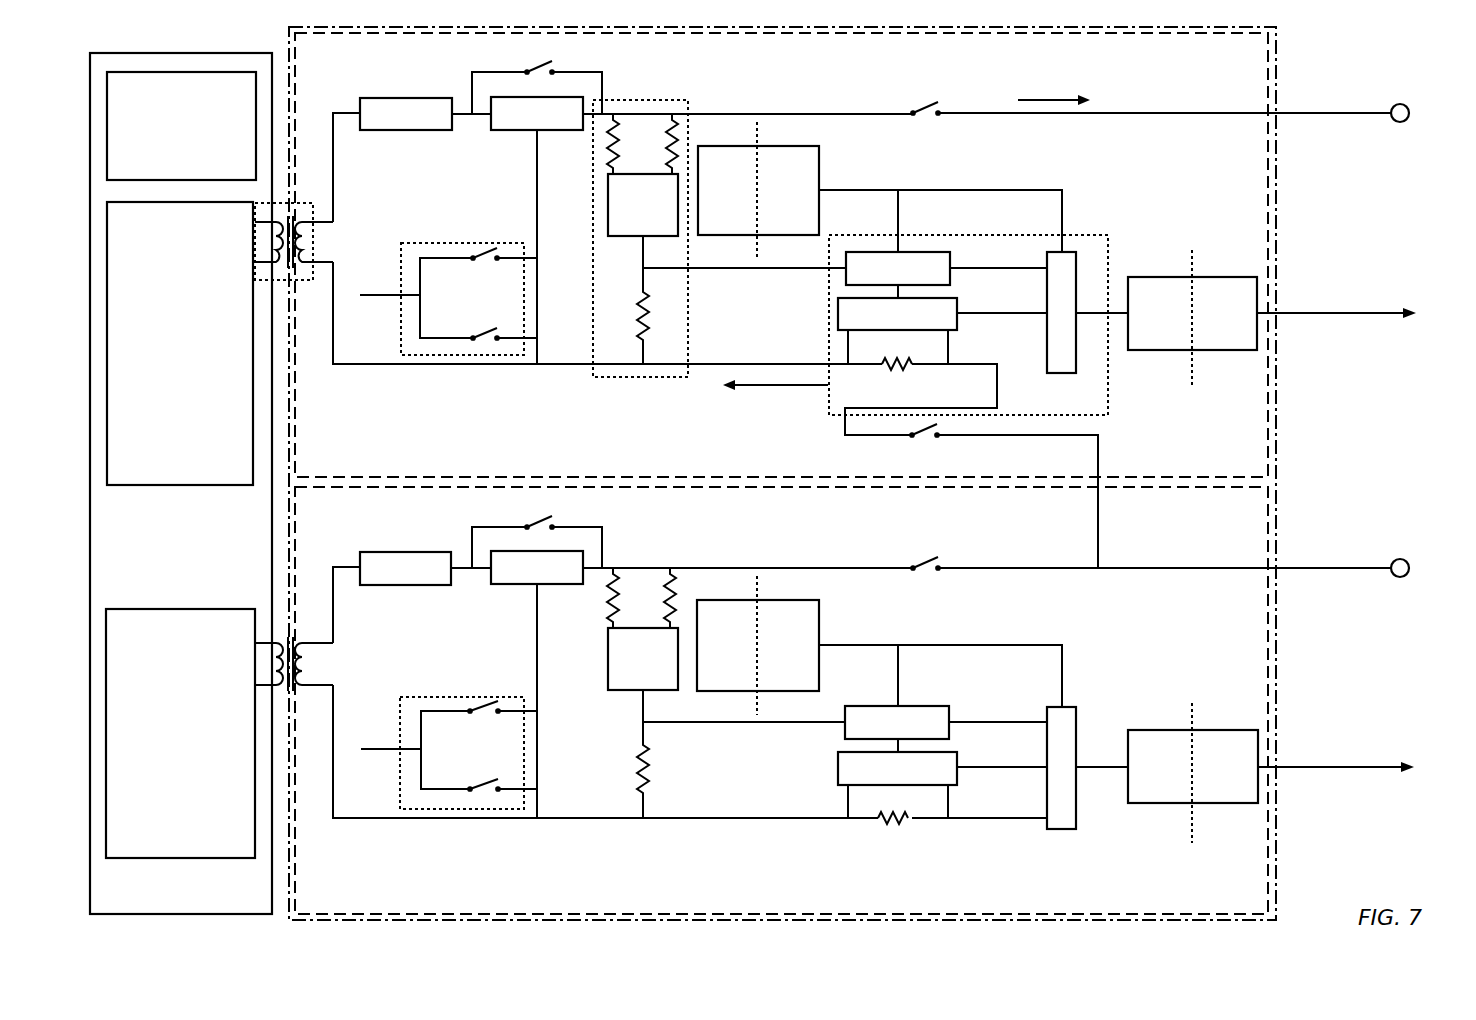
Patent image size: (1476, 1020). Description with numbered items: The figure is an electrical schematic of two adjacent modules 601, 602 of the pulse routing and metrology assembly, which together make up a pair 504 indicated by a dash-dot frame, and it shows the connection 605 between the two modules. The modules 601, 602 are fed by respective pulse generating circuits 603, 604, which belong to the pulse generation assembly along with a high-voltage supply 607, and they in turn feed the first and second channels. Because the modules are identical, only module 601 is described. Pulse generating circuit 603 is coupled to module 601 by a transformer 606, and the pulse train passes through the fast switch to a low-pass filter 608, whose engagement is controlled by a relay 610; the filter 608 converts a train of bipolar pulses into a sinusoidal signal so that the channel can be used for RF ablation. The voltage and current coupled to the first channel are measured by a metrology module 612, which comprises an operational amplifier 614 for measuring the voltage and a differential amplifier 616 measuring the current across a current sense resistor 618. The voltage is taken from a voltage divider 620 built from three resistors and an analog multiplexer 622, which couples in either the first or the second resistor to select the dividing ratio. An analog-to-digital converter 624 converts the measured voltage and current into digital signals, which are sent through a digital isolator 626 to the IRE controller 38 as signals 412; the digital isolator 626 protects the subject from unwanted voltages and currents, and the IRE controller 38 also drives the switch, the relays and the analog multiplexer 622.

The high-voltage supply 607 is at (222, 72).
The pulse generating circuit 603 is at (200, 424).
The pulse generating circuit 604 is at (198, 822).
The transformer 606 is at (312, 281).
The module 601 is at (290, 455).
The module 602 is at (290, 891).
The low-pass filter 608 is at (497, 131).
The relay 610 is at (553, 64).
The voltage divider 620 is at (610, 268).
The analog multiplexer 622 is at (622, 240).
The metrology module 612 is at (1106, 236).
The operational amplifier 614 is at (940, 252).
The differential amplifier 616 is at (957, 331).
The current sense resistor 618 is at (881, 362).
The analog-to-digital converter 624 is at (1076, 374).
The digital isolator 626 is at (1240, 351).
The connection 605 is at (1098, 547).
The signals 412 is at (1285, 313).
The pair 504 is at (1272, 811).
The IRE controller 38 is at (1372, 411).